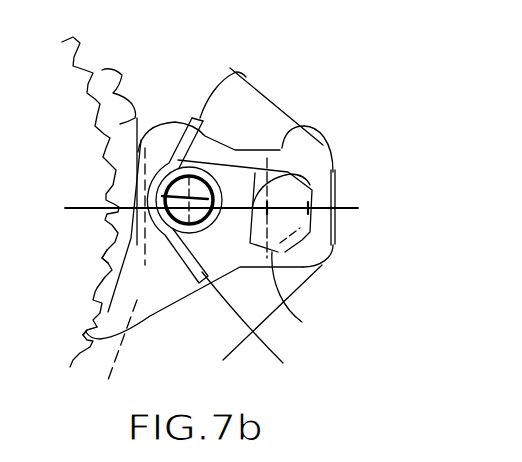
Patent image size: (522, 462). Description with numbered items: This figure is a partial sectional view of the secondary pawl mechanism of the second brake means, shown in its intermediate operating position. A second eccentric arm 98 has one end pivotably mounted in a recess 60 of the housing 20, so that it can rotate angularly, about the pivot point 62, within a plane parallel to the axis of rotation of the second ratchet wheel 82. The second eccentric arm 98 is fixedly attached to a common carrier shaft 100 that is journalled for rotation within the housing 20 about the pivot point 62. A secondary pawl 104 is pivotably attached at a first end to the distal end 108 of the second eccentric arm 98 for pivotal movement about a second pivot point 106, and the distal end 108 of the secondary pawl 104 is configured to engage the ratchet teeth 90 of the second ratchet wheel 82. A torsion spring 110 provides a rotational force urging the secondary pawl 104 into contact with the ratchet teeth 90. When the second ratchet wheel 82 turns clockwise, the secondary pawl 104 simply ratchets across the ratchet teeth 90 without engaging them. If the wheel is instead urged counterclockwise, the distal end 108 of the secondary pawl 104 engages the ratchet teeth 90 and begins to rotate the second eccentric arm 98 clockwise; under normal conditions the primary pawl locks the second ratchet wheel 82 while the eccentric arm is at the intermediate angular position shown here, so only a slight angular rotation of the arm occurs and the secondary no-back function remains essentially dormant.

The housing 20 is at (206, 353).
The recess 60 is at (317, 250).
The pivot point 62 is at (312, 185).
The second ratchet wheel 82 is at (64, 195).
The ratchet teeth 90 is at (105, 272).
The second eccentric arm 98 is at (308, 300).
The common carrier shaft 100 is at (304, 126).
The secondary pawl 104 is at (172, 289).
The second pivot point 106 is at (271, 324).
The distal end 108 is at (88, 328).
The torsion spring 110 is at (240, 77).